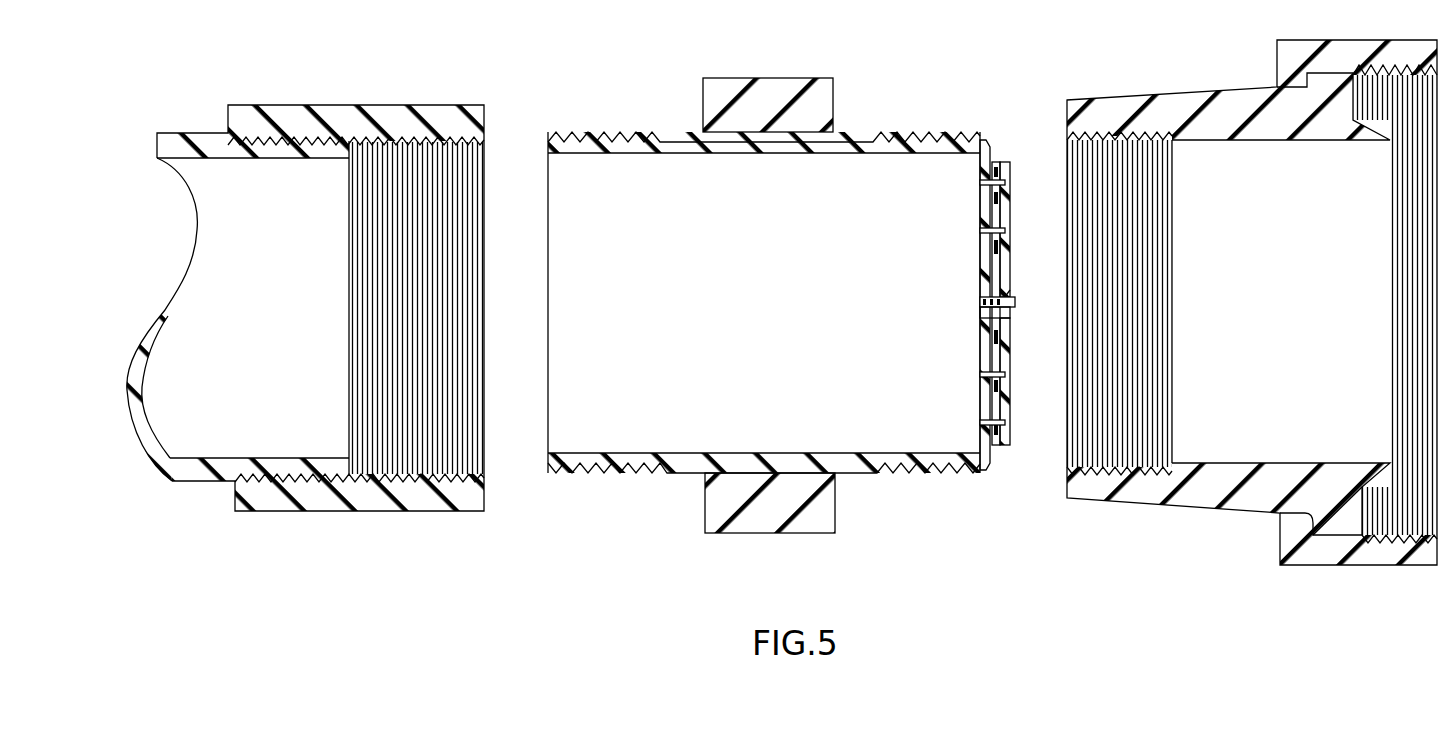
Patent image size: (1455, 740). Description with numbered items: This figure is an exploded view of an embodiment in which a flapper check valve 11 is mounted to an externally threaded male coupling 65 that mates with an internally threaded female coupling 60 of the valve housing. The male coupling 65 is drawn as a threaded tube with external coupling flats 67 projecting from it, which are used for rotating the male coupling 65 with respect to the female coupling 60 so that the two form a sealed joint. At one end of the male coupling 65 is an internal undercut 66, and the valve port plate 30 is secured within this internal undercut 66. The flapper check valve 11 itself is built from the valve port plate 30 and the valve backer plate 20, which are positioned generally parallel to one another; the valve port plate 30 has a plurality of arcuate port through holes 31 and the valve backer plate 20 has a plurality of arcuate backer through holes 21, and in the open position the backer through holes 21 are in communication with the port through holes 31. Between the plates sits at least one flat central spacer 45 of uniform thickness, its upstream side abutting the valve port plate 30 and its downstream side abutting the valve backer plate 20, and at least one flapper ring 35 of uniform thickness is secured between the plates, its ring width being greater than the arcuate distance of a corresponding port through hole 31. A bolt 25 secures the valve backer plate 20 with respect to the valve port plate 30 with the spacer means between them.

The flapper check valve 11 is at (906, 266).
The valve backer plate 20 is at (1008, 268).
The backer through holes 21 is at (1007, 207).
The bolt 25 is at (1010, 307).
The valve port plate 30 is at (980, 340).
The port through holes 31 is at (983, 222).
The flapper ring 35 is at (997, 413).
The central spacer 45 is at (980, 312).
The female coupling 60 is at (1212, 102).
The male coupling 65 is at (860, 142).
The internal undercut 66 is at (980, 143).
The external coupling flats 67 is at (787, 97).